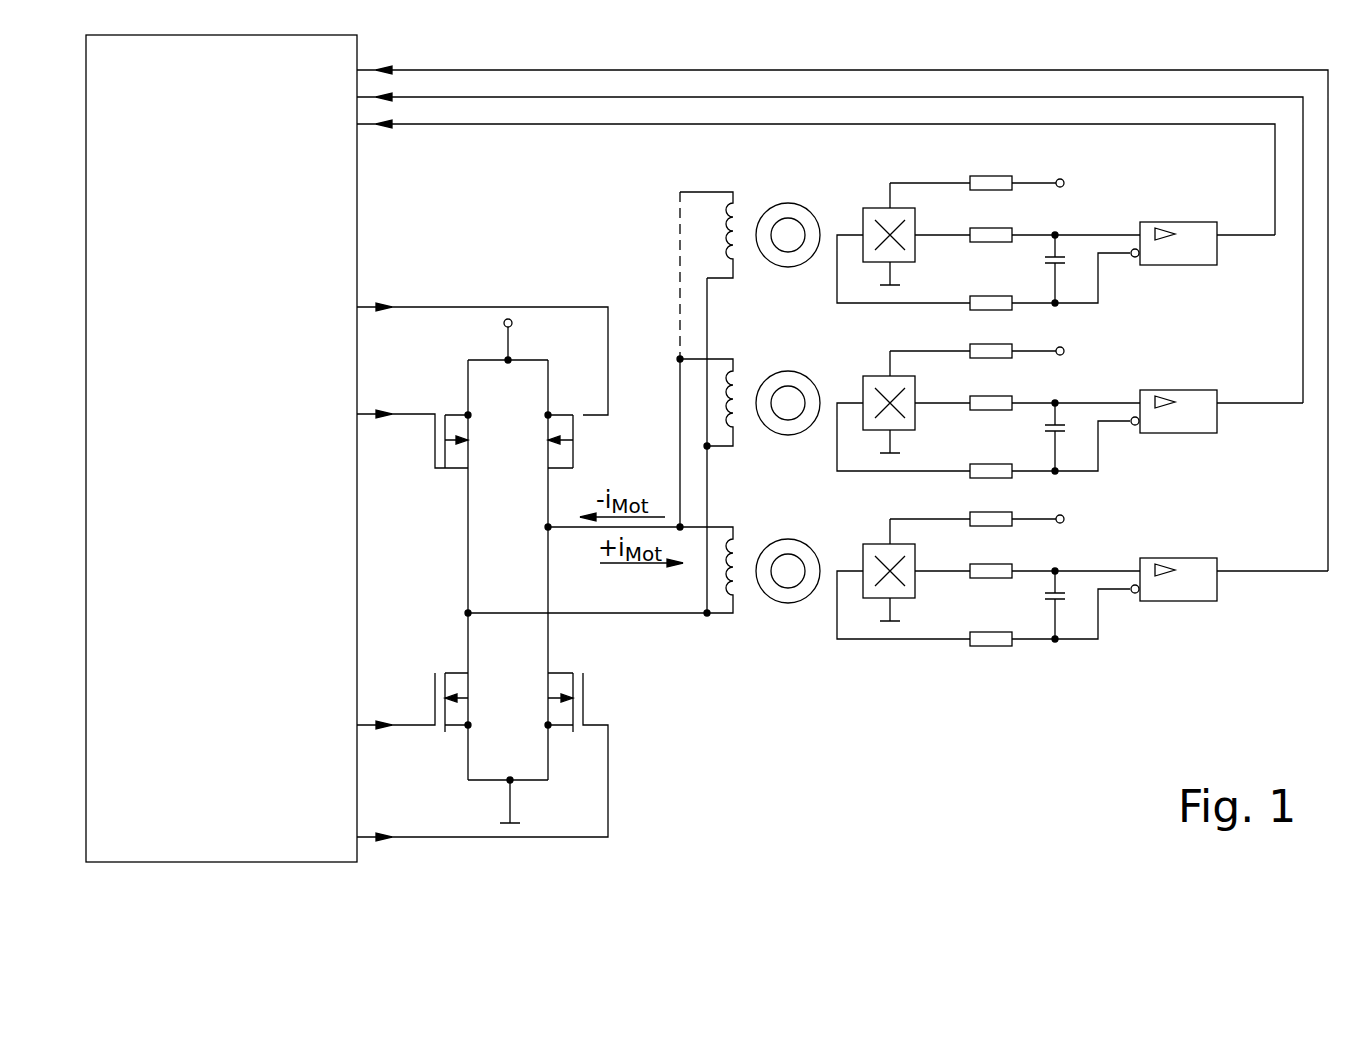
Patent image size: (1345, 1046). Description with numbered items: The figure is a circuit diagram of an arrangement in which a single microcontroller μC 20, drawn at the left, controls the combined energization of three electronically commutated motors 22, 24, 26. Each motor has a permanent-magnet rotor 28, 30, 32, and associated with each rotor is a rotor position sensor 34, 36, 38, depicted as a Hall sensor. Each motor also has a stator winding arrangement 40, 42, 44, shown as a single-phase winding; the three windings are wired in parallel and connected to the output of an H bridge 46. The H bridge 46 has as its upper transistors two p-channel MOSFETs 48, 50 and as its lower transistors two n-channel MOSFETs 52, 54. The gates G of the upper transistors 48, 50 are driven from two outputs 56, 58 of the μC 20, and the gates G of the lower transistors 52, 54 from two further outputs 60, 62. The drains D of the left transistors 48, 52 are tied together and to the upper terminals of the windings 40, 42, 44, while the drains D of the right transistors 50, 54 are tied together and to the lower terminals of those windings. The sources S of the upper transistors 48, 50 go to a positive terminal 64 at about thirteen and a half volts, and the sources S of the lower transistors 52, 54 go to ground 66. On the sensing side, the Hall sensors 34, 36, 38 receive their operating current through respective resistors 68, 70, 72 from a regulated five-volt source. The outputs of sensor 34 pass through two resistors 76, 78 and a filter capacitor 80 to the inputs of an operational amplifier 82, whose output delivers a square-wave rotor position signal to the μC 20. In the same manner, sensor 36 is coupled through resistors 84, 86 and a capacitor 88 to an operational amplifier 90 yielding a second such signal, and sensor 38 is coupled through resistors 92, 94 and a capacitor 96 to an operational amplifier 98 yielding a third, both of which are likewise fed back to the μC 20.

The μC 20 is at (223, 275).
The electronically commutated motor 22 is at (804, 533).
The electronically commutated motor 24 is at (804, 365).
The electronically commutated motor 26 is at (804, 197).
The permanent-magnet rotor 28 is at (775, 599).
The permanent-magnet rotor 30 is at (775, 431).
The permanent-magnet rotor 32 is at (775, 263).
The rotor position sensor 34 is at (868, 554).
The rotor position sensor 36 is at (868, 386).
The rotor position sensor 38 is at (868, 218).
The stator winding arrangement 40 is at (738, 600).
The stator winding arrangement 42 is at (738, 430).
The stator winding arrangement 44 is at (706, 236).
The H bridge 46 is at (527, 534).
The p-channel MOSFET 48 is at (448, 410).
The p-channel MOSFET 50 is at (574, 409).
The n-channel MOSFET 52 is at (435, 676).
The n-channel MOSFET 54 is at (583, 694).
The output 56 is at (365, 411).
The output 58 is at (365, 304).
The output 60 is at (365, 722).
The output 62 is at (365, 834).
The positive terminal 64 is at (504, 323).
The ground 66 is at (508, 805).
The resistor 68 is at (978, 518).
The resistor 70 is at (978, 350).
The resistor 72 is at (978, 182).
The resistor 76 is at (978, 570).
The resistor 78 is at (978, 638).
The filter capacitor 80 is at (1045, 598).
The operational amplifier 82 is at (1168, 553).
The resistor 84 is at (978, 402).
The resistor 86 is at (978, 470).
The capacitor 88 is at (1045, 430).
The operational amplifier 90 is at (1168, 385).
The resistor 92 is at (978, 234).
The resistor 94 is at (978, 302).
The capacitor 96 is at (1045, 262).
The operational amplifier 98 is at (1168, 217).